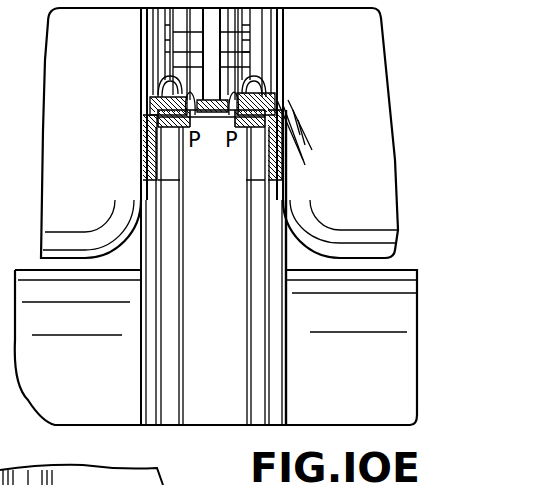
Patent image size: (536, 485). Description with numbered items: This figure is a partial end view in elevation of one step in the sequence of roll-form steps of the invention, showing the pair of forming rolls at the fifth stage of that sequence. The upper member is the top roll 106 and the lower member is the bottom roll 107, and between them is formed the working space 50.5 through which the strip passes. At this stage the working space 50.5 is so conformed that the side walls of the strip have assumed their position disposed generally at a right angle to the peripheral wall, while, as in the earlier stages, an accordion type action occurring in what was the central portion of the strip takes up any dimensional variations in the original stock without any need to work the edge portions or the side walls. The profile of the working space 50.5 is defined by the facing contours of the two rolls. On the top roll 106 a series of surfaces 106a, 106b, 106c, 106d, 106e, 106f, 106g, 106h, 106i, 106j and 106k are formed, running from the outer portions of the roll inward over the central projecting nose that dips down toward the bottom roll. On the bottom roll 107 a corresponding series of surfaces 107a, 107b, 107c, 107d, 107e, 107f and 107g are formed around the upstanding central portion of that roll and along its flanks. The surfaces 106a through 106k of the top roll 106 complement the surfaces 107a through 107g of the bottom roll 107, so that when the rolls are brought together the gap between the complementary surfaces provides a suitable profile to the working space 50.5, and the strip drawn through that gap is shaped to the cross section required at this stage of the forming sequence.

The top roll 106 is at (85, 40).
The surface of top roll 106a is at (150, 114).
The surface of top roll 106b is at (156, 62).
The surface of top roll 106c is at (163, 37).
The surface of top roll 106d is at (187, 42).
The surface of top roll 106e is at (220, 57).
The surface of top roll 106f is at (240, 82).
The surface of top roll 106g is at (283, 92).
The surface of top roll 106h is at (288, 100).
The surface of top roll 106i is at (178, 20).
The surface of top roll 106j is at (292, 110).
The surface of top roll 106k is at (298, 122).
The working space 50.5 is at (167, 76).
The bottom roll 107 is at (97, 376).
The surface of bottom roll 107a is at (155, 162).
The surface of bottom roll 107b is at (155, 155).
The surface of bottom roll 107c is at (162, 153).
The surface of bottom roll 107d is at (205, 118).
The surface of bottom roll 107e is at (260, 300).
The surface of bottom roll 107f is at (280, 240).
The surface of bottom roll 107g is at (287, 215).